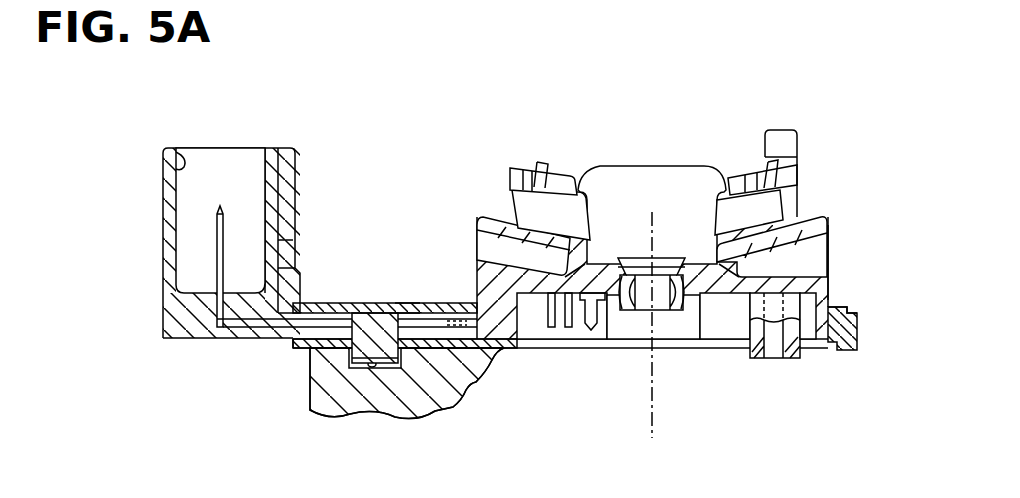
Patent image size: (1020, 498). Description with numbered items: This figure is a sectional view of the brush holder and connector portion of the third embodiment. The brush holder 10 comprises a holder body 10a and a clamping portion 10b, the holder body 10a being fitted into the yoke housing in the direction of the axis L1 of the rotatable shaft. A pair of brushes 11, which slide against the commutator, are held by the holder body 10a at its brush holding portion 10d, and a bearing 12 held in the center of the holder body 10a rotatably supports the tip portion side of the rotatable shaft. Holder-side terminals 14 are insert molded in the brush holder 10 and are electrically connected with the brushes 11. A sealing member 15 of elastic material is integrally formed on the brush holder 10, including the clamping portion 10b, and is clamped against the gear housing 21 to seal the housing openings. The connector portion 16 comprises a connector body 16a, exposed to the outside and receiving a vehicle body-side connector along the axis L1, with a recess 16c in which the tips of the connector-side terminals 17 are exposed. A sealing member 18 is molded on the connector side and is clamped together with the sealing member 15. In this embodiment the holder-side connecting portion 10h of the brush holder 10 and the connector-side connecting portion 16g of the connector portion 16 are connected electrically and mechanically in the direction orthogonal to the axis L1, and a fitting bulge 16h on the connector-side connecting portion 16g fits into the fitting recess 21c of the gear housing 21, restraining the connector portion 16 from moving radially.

The brush holder 10 is at (683, 206).
The holder body 10a is at (820, 217).
The clamping portion 10b is at (846, 307).
The brush holding portion 10d is at (723, 170).
The holder-side connecting portion 10h is at (405, 303).
The brushes 11 is at (532, 172).
The bearing 12 is at (634, 311).
The holder-side terminals 14 is at (385, 313).
The sealing member 15 is at (433, 303).
The connector portion 16 is at (236, 234).
The connector body 16a is at (163, 263).
The recess 16c is at (185, 152).
The connector-side connecting portion 16g is at (350, 303).
The fitting bulge 16h is at (343, 352).
The connector-side terminals 17 is at (219, 210).
The sealing member 18 is at (328, 303).
The gear housing 21 is at (445, 403).
The fitting recess 21c is at (365, 370).
The axis L1 is at (657, 425).